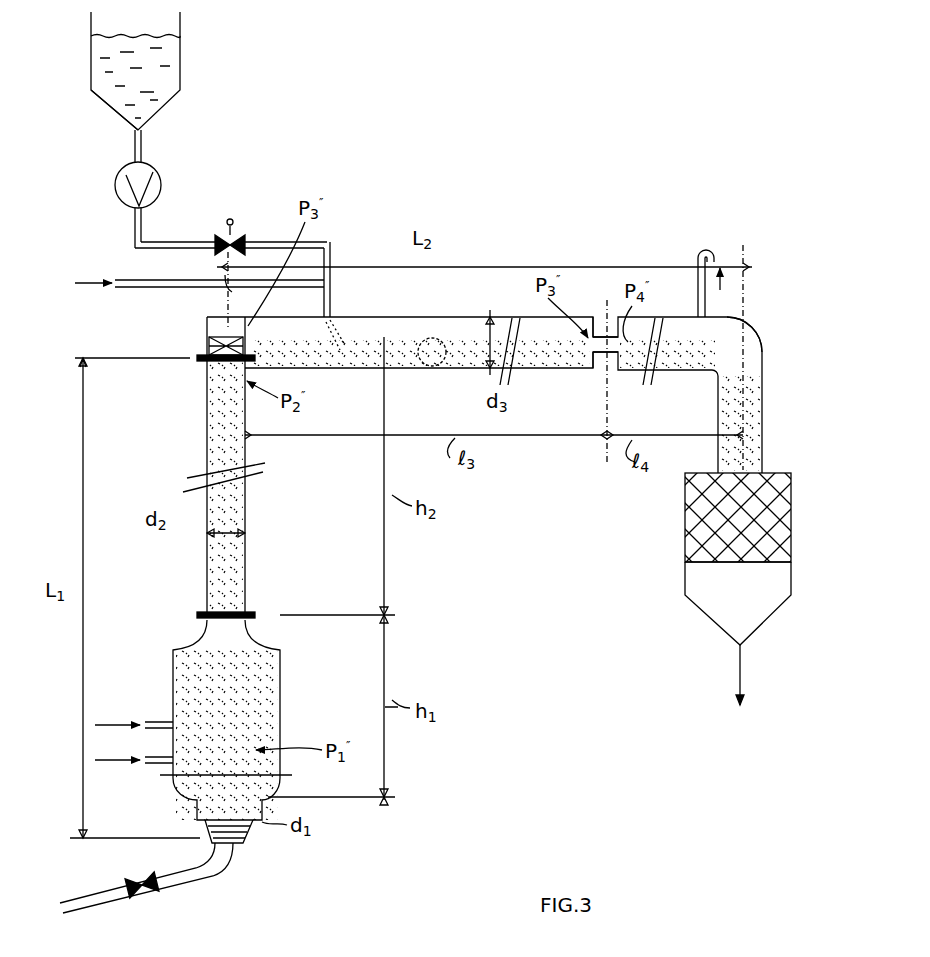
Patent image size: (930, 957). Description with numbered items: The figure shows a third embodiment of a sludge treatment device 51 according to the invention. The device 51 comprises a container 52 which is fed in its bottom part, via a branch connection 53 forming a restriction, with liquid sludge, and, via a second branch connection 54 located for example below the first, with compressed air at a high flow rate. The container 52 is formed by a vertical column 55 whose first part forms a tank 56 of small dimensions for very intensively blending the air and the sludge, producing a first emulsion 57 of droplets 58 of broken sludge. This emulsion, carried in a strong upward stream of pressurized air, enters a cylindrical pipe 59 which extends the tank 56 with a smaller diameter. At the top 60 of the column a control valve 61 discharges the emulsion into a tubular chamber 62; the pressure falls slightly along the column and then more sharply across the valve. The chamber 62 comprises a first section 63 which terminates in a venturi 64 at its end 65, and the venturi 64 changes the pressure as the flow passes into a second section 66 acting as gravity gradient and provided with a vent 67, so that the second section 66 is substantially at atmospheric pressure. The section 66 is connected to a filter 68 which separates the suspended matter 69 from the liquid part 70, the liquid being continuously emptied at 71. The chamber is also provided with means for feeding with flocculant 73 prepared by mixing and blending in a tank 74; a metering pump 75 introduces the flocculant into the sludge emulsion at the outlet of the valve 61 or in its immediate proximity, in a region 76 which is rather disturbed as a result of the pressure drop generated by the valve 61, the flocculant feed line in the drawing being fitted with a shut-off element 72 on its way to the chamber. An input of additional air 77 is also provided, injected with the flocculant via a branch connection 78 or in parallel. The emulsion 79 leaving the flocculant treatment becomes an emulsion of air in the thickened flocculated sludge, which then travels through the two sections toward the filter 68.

The device 51 is at (520, 240).
The container 52 is at (198, 570).
The branch connection 53 is at (158, 722).
The second branch connection 54 is at (160, 766).
The vertical column 55 is at (252, 580).
The tank 56 is at (284, 732).
The first emulsion 57 is at (244, 685).
The droplets 58 is at (210, 420).
The cylindrical pipe 59 is at (205, 388).
The top 60 is at (200, 354).
The control valve 61 is at (220, 322).
The tubular chamber 62 is at (447, 312).
The first section 63 is at (433, 368).
The venturi 64 is at (605, 345).
The end of the first section 65 is at (586, 332).
The second section 66 is at (696, 300).
The vent 67 is at (708, 300).
The filter 68 is at (684, 498).
The suspended matter 69 is at (714, 530).
The liquid part 70 is at (718, 588).
The emptying outlet 71 is at (738, 668).
The valve 72 is at (262, 212).
The flocculant 73 is at (180, 62).
The tank 74 is at (104, 105).
The metering pump 75 is at (162, 178).
The region 76 is at (342, 345).
The additional air 77 is at (130, 282).
The branch connection 78 is at (338, 330).
The emulsion 79 is at (338, 352).